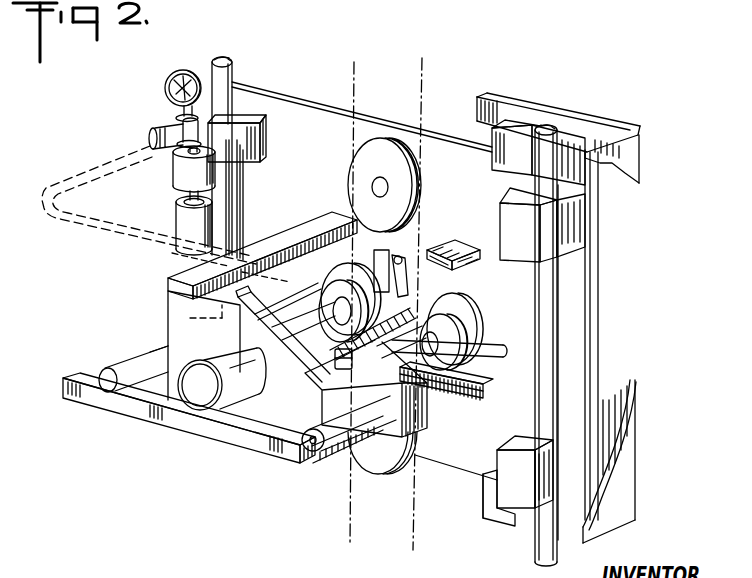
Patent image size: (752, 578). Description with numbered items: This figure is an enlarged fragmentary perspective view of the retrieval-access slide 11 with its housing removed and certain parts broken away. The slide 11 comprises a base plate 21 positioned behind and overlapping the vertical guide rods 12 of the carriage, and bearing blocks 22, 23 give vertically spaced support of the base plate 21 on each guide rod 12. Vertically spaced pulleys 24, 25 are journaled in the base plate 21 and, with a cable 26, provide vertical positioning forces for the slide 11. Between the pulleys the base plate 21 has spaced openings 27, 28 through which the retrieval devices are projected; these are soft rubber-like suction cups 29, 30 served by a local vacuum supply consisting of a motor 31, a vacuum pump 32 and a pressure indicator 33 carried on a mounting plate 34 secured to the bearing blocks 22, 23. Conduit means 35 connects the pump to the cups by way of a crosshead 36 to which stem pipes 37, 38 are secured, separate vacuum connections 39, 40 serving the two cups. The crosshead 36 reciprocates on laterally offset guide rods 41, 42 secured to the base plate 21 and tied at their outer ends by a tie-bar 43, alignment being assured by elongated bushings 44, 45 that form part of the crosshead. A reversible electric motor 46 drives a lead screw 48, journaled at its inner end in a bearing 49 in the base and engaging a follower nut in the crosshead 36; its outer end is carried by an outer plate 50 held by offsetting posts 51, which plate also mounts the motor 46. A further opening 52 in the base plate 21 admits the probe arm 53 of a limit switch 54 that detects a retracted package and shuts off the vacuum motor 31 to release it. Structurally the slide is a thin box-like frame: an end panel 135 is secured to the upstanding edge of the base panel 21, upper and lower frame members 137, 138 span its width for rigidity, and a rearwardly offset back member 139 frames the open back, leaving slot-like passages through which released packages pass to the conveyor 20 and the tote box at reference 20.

The retrieval-access slide 11 is at (170, 448).
The vertical guide rods 12 is at (232, 80).
The guiding conveyor belt 20 is at (545, 7).
The base plate 21 is at (580, 270).
The bearing block 22 is at (507, 194).
The bearing block 23 is at (520, 447).
The pulley 24 is at (378, 150).
The pulley 25 is at (381, 468).
The cable 26 is at (426, 88).
The opening 27 is at (340, 282).
The opening 28 is at (464, 304).
The retrieval suction cup 29 is at (355, 266).
The retrieval suction cup 30 is at (462, 330).
The motor 31 is at (183, 218).
The vacuum pump 32 is at (178, 172).
The pressure indicator 33 is at (186, 68).
The mounting plate 34 is at (232, 205).
The conduit means 35 is at (58, 234).
The crosshead 36 is at (412, 452).
The stem pipe 37 is at (320, 290).
The stem pipe 38 is at (388, 360).
The vacuum connection 39 is at (218, 312).
The vacuum connection 40 is at (302, 381).
The guide rod 41 is at (105, 372).
The guide rod 42 is at (302, 437).
The tie-bar 43 is at (128, 418).
The elongated bushing 44 is at (138, 356).
The elongated bushing 45 is at (330, 448).
The reversible electric motor 46 is at (205, 365).
The lead screw 48 is at (447, 388).
The bearing 49 is at (395, 320).
The outer plate 50 is at (220, 410).
The offsetting posts 51 is at (320, 228).
The opening 52 is at (420, 272).
The probe arm 53 is at (405, 262).
The limit switch 54 is at (378, 235).
The end panel 135 is at (610, 172).
The upper frame member 137 is at (520, 135).
The lower frame member 138 is at (502, 519).
The back frame member 139 is at (505, 100).